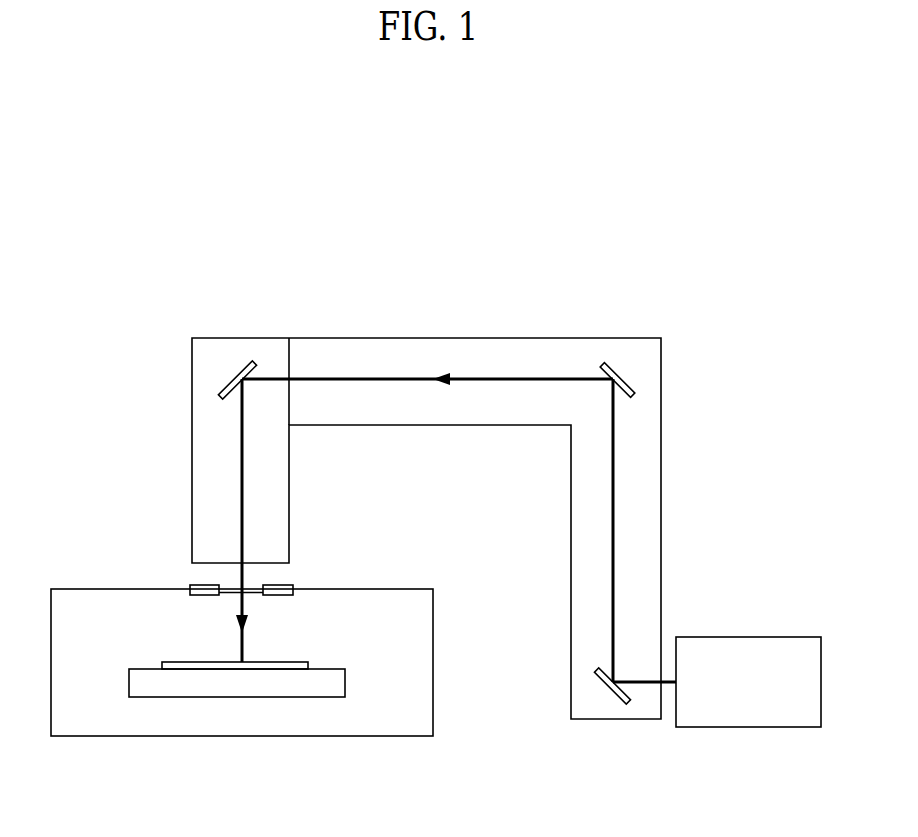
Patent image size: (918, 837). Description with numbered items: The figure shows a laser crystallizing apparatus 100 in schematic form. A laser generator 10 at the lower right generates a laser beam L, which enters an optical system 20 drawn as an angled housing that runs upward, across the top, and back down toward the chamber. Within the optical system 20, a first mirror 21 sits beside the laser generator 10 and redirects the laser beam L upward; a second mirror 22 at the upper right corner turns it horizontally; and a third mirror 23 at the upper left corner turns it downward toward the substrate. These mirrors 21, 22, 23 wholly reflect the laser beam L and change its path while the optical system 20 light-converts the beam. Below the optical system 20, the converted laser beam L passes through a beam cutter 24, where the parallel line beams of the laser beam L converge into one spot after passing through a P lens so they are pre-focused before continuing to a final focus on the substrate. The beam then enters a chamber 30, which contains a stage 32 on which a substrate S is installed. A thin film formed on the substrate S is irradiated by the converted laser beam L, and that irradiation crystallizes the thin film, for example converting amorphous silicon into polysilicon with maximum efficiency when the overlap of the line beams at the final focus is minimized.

The laser crystallizing apparatus 100 is at (447, 243).
The laser generator 10 is at (758, 637).
The optical system 20 is at (468, 338).
The mirror 21 is at (612, 698).
The mirror 22 is at (627, 382).
The mirror 23 is at (236, 366).
The beam cutter 24 is at (282, 585).
The chamber 30 is at (298, 736).
The stage 32 is at (210, 688).
The substrate S is at (305, 662).
The laser beam L is at (456, 512).